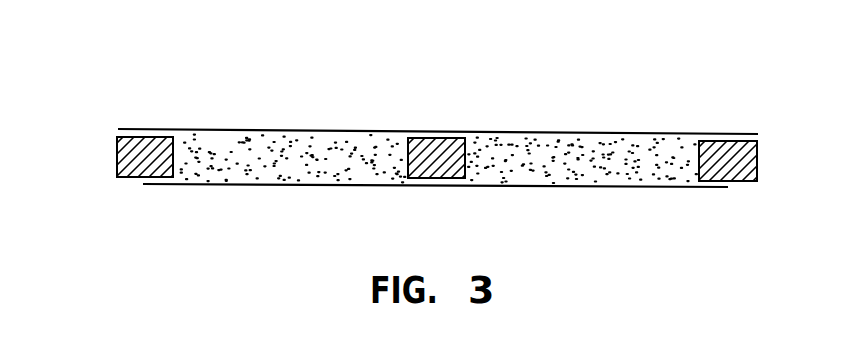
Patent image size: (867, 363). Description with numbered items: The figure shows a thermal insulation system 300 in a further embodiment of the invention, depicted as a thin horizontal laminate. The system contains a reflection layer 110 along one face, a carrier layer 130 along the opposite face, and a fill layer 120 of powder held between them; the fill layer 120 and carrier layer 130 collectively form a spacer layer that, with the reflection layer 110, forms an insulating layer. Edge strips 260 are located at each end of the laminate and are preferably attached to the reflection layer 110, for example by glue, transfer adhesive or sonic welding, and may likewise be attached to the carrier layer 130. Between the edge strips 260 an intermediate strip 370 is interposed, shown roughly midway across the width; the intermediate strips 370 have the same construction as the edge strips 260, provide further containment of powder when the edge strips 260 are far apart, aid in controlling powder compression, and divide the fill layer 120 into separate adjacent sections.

The thermal insulation system 300 is at (545, 82).
The reflection layer 110 is at (667, 188).
The carrier layer 130 is at (608, 132).
The fill layer 120 is at (354, 172).
The edge strips 260 is at (117, 157).
The intermediate strips 370 is at (436, 157).